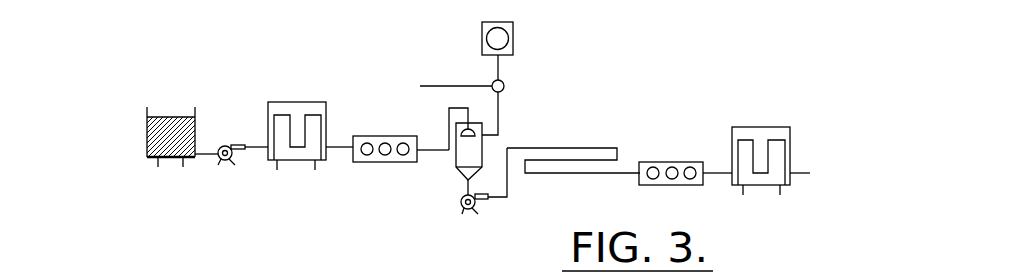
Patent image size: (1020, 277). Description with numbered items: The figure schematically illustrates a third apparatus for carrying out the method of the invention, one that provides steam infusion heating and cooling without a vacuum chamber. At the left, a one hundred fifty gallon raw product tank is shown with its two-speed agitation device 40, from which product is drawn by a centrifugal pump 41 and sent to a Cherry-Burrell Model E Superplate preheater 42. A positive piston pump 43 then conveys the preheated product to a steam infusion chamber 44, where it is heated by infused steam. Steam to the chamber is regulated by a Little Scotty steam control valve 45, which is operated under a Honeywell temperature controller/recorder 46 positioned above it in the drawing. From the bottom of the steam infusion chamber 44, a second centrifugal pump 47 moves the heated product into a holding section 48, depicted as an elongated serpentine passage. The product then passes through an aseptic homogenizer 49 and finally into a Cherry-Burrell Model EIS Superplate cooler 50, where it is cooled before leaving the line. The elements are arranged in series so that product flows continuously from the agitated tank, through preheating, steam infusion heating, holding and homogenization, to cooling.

The two-speed agitation device 40 is at (195, 118).
The centrifugal pump 41 is at (228, 147).
The Superplate preheater 42 is at (305, 100).
The positive piston pump 43 is at (388, 162).
The steam infusion chamber 44 is at (456, 158).
The steam control valve 45 is at (505, 92).
The temperature controller/recorder 46 is at (482, 33).
The centrifugal pump 47 is at (470, 210).
The holding section 48 is at (573, 148).
The aseptic homogenizer 49 is at (673, 160).
The Superplate cooler 50 is at (767, 127).